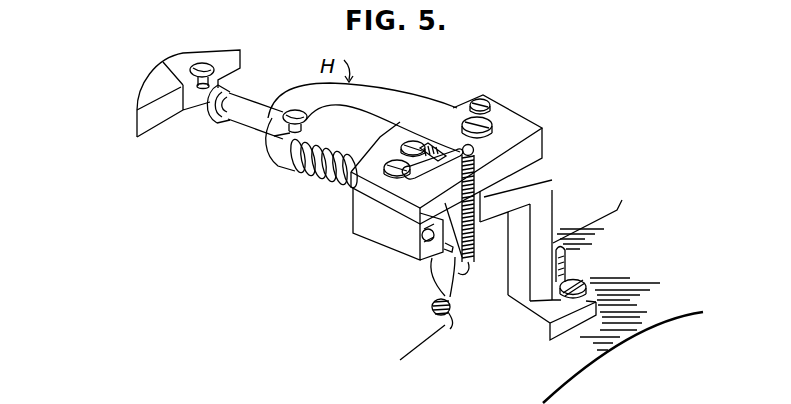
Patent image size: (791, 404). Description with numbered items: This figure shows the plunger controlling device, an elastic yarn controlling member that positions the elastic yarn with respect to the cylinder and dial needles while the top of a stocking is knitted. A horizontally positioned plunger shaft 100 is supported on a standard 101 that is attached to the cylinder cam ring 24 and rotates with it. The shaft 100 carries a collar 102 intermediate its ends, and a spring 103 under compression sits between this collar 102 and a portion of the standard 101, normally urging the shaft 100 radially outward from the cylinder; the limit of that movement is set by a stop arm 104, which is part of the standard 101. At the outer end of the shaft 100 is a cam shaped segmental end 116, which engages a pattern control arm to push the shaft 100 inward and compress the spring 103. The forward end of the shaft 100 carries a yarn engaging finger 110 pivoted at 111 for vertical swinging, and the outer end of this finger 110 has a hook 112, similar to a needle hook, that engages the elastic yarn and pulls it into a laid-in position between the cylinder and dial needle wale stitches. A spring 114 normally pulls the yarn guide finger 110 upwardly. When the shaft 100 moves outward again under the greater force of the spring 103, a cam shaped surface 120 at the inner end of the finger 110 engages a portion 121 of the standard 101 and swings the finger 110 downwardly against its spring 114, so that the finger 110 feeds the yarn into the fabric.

The cylinder cam ring 24 is at (618, 213).
The plunger shaft 100 is at (243, 120).
The standard 101 is at (553, 210).
The collar 102 is at (280, 147).
The spring 103 is at (327, 173).
The stop arm 104 is at (257, 145).
The yarn engaging finger 110 is at (433, 278).
The pivot 111 is at (417, 250).
The hook 112 is at (449, 325).
The spring 114 is at (445, 185).
The cam shaped segmental end 116 is at (137, 125).
The cam shaped surface 120 is at (410, 200).
The portion of the standard 121 is at (413, 223).